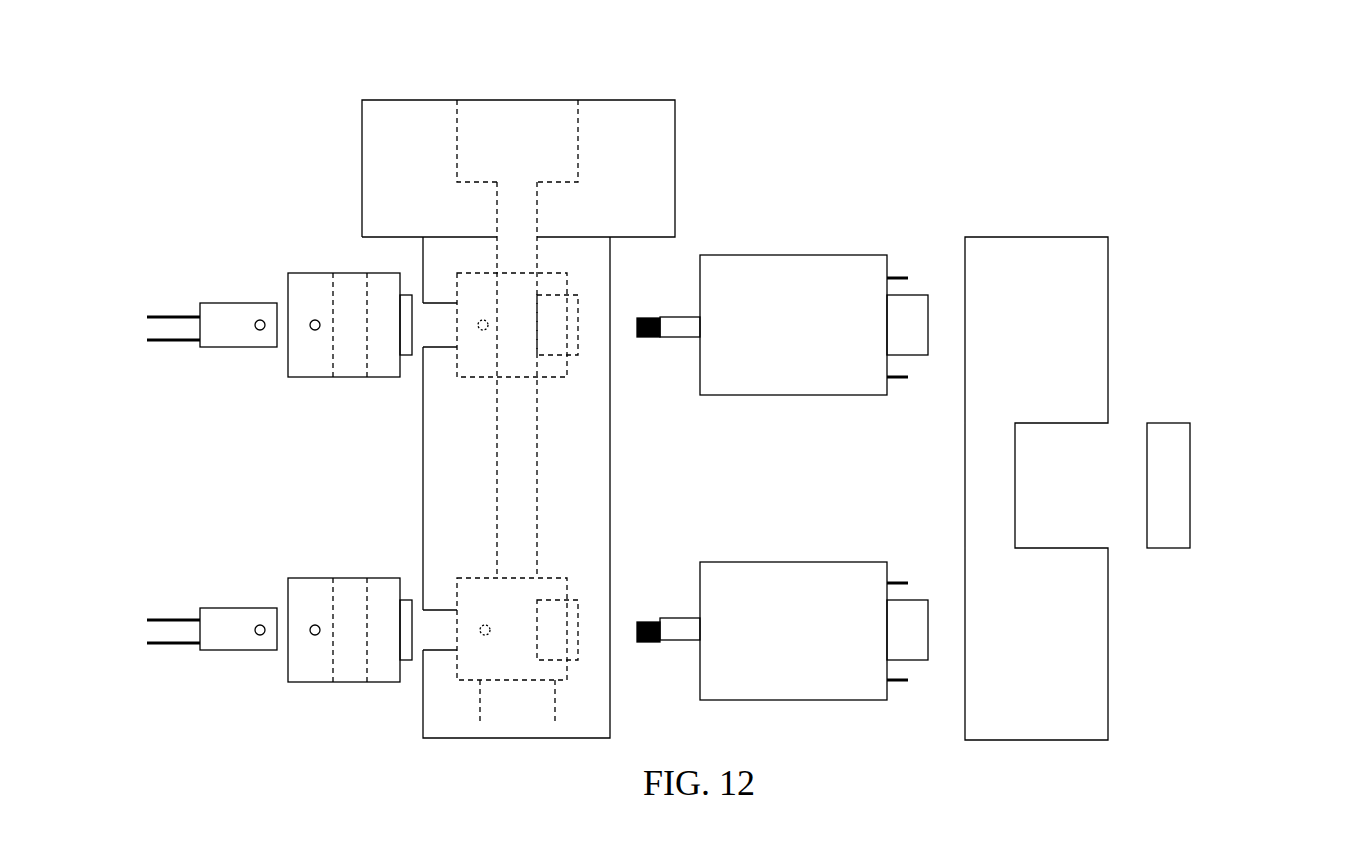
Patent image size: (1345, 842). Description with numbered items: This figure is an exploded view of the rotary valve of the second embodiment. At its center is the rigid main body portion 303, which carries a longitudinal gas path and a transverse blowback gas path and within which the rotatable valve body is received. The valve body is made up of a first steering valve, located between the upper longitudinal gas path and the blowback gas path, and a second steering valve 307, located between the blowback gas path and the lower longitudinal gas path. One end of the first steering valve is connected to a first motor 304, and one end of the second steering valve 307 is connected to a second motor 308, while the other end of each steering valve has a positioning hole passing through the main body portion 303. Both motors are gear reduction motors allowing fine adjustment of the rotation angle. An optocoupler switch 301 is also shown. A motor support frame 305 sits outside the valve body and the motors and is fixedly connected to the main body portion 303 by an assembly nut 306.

The optocoupler switch 301 is at (242, 303).
The main body portion 303 is at (675, 140).
The first motor 304 is at (765, 282).
The motor support frame 305 is at (1057, 240).
The assembly nut 306 is at (1190, 462).
The second steering valve 307 is at (225, 622).
The second motor 308 is at (727, 600).